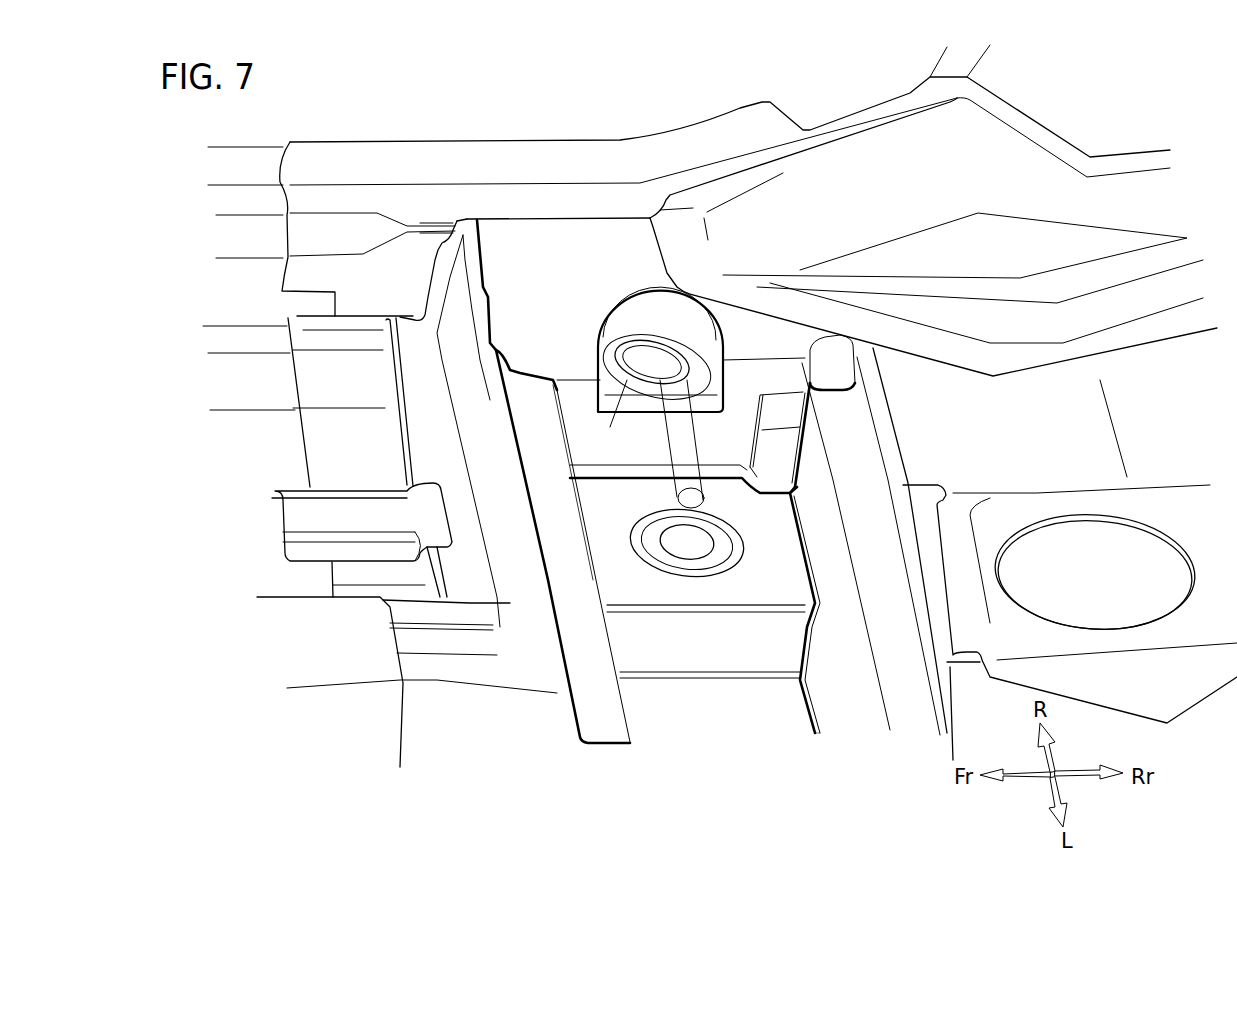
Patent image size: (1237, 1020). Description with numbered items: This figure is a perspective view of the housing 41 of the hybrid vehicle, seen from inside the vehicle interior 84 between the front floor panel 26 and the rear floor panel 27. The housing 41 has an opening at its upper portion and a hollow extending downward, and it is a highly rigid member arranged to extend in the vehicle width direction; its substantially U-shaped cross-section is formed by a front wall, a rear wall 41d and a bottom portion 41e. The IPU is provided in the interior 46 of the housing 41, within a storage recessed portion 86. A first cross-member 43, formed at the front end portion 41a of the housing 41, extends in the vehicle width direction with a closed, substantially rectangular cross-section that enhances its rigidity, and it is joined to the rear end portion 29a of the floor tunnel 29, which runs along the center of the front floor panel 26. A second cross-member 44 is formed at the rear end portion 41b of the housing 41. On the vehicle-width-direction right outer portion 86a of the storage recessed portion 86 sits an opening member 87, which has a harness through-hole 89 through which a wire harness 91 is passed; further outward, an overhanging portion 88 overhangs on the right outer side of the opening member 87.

The front floor panel 26 is at (248, 430).
The rear floor panel 27 is at (1140, 417).
The floor tunnel 29 is at (280, 605).
The rear end portion of the floor tunnel 29a is at (470, 607).
The housing 41 is at (803, 347).
The front end portion of the housing 41a is at (593, 518).
The rear end portion of the housing 41b is at (827, 463).
The rear wall 41d is at (847, 713).
The bottom portion 41e is at (710, 705).
The first cross-member 43 is at (537, 446).
The second cross-member 44 is at (883, 520).
The interior of the housing 46 is at (782, 586).
The vehicle interior 84 is at (366, 451).
The storage recessed portion 86 is at (840, 665).
The vehicle-width-direction right outer portion 86a is at (743, 373).
The opening member 87 is at (610, 313).
The overhanging portion 88 is at (573, 237).
The harness through-hole 89 is at (625, 385).
The wire harness 91 is at (693, 442).